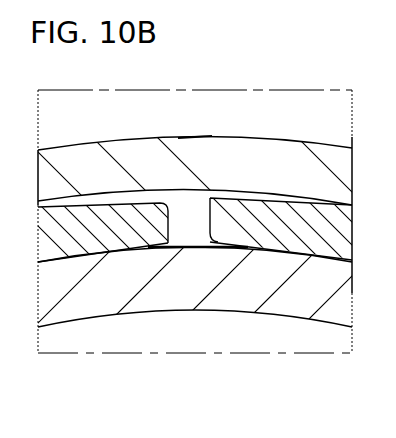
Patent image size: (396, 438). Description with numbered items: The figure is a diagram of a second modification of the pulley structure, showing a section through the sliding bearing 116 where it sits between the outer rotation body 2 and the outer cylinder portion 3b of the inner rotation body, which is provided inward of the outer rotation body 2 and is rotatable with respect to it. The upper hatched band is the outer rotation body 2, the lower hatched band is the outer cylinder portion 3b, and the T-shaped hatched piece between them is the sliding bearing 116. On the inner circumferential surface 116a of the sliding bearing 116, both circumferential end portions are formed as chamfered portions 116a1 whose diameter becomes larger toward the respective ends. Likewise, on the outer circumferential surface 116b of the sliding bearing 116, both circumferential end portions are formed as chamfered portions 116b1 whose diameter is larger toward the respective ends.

The outer rotation body 2 is at (200, 137).
The outer cylinder portion 3b is at (252, 300).
The sliding bearing 116 is at (104, 248).
The inner circumferential surface 116a is at (321, 257).
The chamfered portion 116a1 is at (150, 250).
The outer circumferential surface 116b is at (75, 199).
The chamfered portion 116b1 is at (145, 201).